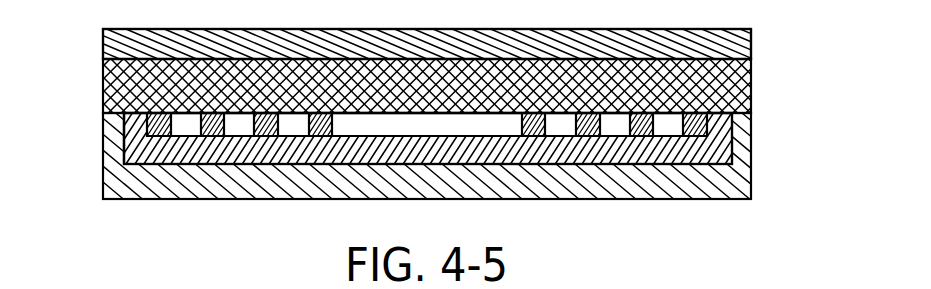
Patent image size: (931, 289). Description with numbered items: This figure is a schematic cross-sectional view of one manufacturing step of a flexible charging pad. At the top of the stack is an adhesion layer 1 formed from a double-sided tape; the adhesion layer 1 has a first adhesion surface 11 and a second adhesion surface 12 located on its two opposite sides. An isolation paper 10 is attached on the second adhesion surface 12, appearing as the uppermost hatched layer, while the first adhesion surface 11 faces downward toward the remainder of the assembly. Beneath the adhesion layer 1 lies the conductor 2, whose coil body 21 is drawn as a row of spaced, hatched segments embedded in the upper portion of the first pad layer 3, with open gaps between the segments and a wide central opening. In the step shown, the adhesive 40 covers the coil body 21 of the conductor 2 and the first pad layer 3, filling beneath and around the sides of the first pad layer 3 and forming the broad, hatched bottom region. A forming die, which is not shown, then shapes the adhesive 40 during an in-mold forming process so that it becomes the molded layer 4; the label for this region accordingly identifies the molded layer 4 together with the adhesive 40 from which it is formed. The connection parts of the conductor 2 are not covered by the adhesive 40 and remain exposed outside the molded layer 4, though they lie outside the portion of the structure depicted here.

The isolation paper 10 is at (743, 42).
The second adhesion surface 12 is at (104, 47).
The first adhesion surface 11 is at (104, 123).
The adhesion layer 1 is at (750, 84).
The first pad layer 3 is at (731, 135).
The molded layer 4 is at (480, 156).
The adhesive 40 is at (738, 177).
The coil body 21 is at (416, 178).
The conductor 2 is at (148, 137).